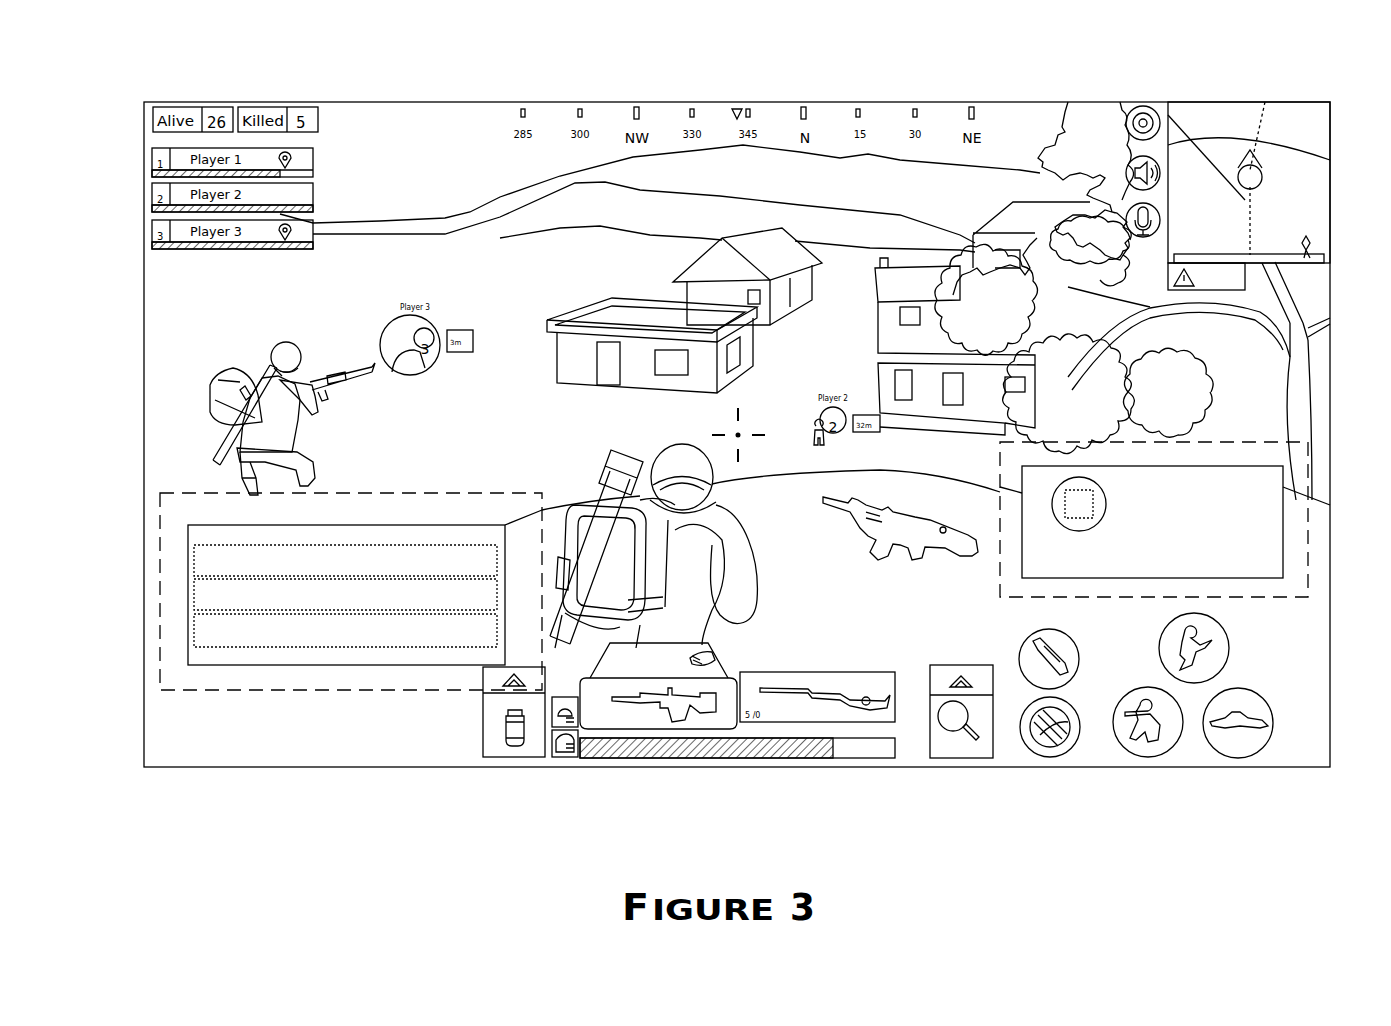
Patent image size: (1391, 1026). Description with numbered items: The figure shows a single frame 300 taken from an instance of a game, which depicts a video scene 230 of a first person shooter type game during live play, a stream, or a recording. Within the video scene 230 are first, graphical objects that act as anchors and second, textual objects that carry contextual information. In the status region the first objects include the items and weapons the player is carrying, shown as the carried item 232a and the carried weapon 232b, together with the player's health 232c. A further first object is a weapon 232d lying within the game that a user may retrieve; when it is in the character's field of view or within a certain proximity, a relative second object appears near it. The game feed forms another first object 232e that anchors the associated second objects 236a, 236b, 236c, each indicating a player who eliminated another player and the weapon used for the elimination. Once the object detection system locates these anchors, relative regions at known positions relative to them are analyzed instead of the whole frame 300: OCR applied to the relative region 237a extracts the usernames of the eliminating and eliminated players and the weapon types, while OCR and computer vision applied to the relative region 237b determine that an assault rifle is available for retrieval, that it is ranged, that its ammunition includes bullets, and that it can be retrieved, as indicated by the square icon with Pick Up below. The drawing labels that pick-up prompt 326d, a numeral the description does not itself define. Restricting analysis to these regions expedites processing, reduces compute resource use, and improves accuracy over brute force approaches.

The frame 300 is at (96, 76).
The video scene 230 is at (1332, 118).
The first object 232a is at (518, 757).
The first object 232b is at (645, 740).
The first object 232c is at (786, 758).
The first object 232d is at (900, 555).
The first object 232e is at (188, 528).
The second object 236a is at (196, 562).
The second object 236b is at (196, 596).
The second object 236c is at (196, 630).
The relative region 237a is at (308, 693).
The relative region 237b is at (1146, 598).
The pickup prompt 326d is at (1283, 512).